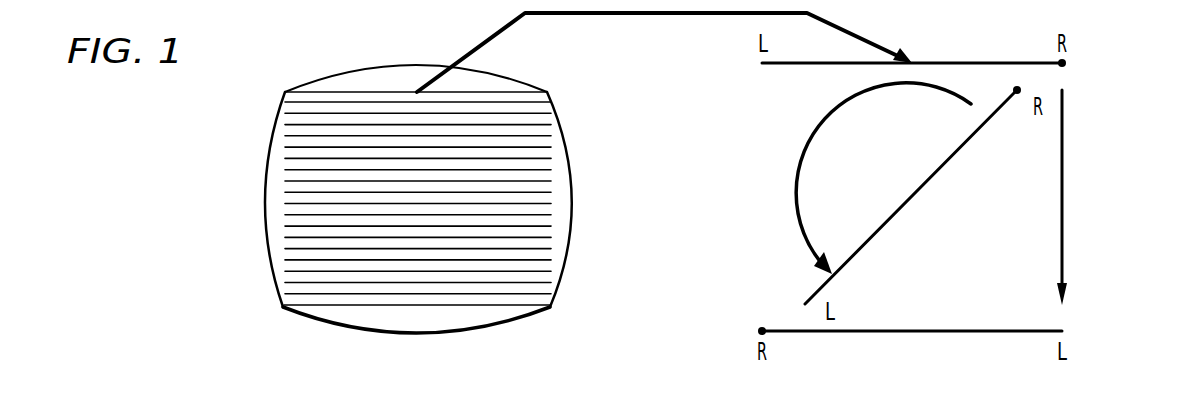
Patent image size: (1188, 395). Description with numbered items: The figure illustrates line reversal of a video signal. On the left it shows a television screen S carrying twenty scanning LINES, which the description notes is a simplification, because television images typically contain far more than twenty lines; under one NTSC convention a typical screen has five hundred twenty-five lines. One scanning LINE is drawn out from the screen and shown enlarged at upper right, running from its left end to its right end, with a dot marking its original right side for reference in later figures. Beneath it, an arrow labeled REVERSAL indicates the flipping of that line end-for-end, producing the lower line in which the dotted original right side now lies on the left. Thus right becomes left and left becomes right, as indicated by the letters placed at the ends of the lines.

The television screen S is at (332, 322).
The scanning lines LINES is at (495, 287).
The scanning line LINE is at (943, 63).
The line reversal REVERSAL is at (1108, 197).